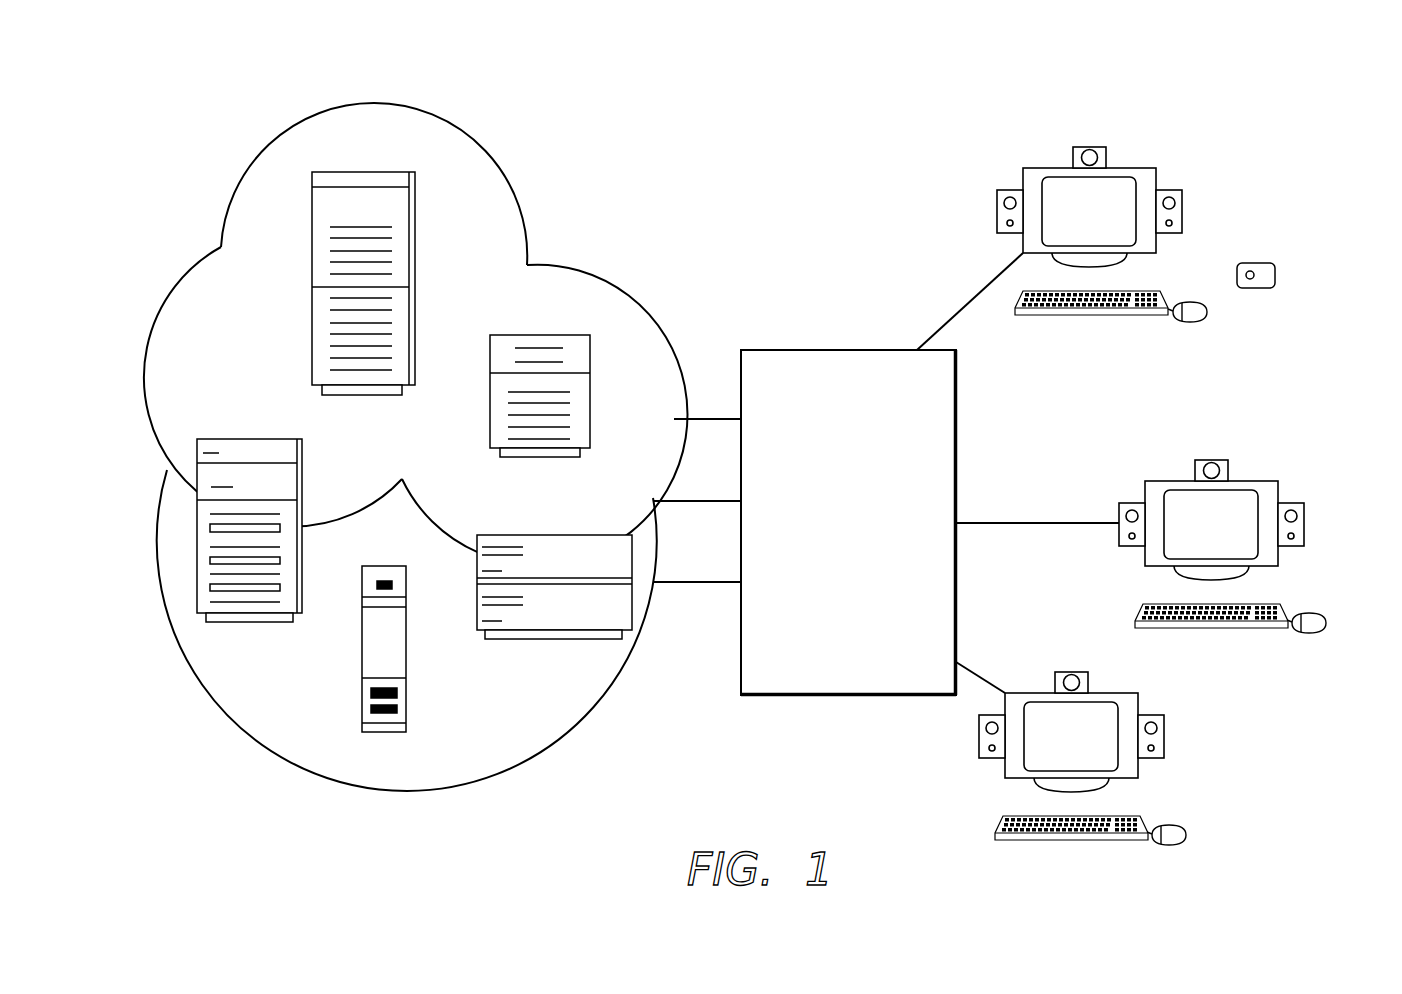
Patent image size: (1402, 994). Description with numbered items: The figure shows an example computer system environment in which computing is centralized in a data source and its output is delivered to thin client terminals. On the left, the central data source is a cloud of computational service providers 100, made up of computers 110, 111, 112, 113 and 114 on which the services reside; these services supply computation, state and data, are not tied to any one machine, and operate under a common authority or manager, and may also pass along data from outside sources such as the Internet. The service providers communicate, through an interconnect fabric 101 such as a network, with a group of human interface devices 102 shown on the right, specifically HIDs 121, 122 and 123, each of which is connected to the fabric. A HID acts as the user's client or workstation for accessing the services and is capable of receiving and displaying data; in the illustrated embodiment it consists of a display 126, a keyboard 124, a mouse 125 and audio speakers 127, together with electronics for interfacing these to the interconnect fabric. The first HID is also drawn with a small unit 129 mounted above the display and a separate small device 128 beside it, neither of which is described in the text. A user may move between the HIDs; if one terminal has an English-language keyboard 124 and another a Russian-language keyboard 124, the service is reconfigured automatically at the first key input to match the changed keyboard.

The computational service providers 100 is at (590, 62).
The interconnect fabric 101 is at (848, 695).
The human interface devices 102 is at (1263, 65).
The computer 110 is at (415, 278).
The computer 111 is at (540, 335).
The computer 112 is at (552, 639).
The computer 113 is at (383, 732).
The computer 114 is at (197, 526).
The human interface device 121 is at (1152, 176).
The human interface device 122 is at (1278, 490).
The human interface device 123 is at (1136, 697).
The keyboard 124 is at (1087, 315).
The mouse 125 is at (1207, 313).
The display 126 is at (1047, 170).
The audio speakers 127 is at (1185, 210).
The remote device / smart card reader 128 is at (1275, 275).
The camera 129 is at (1090, 147).